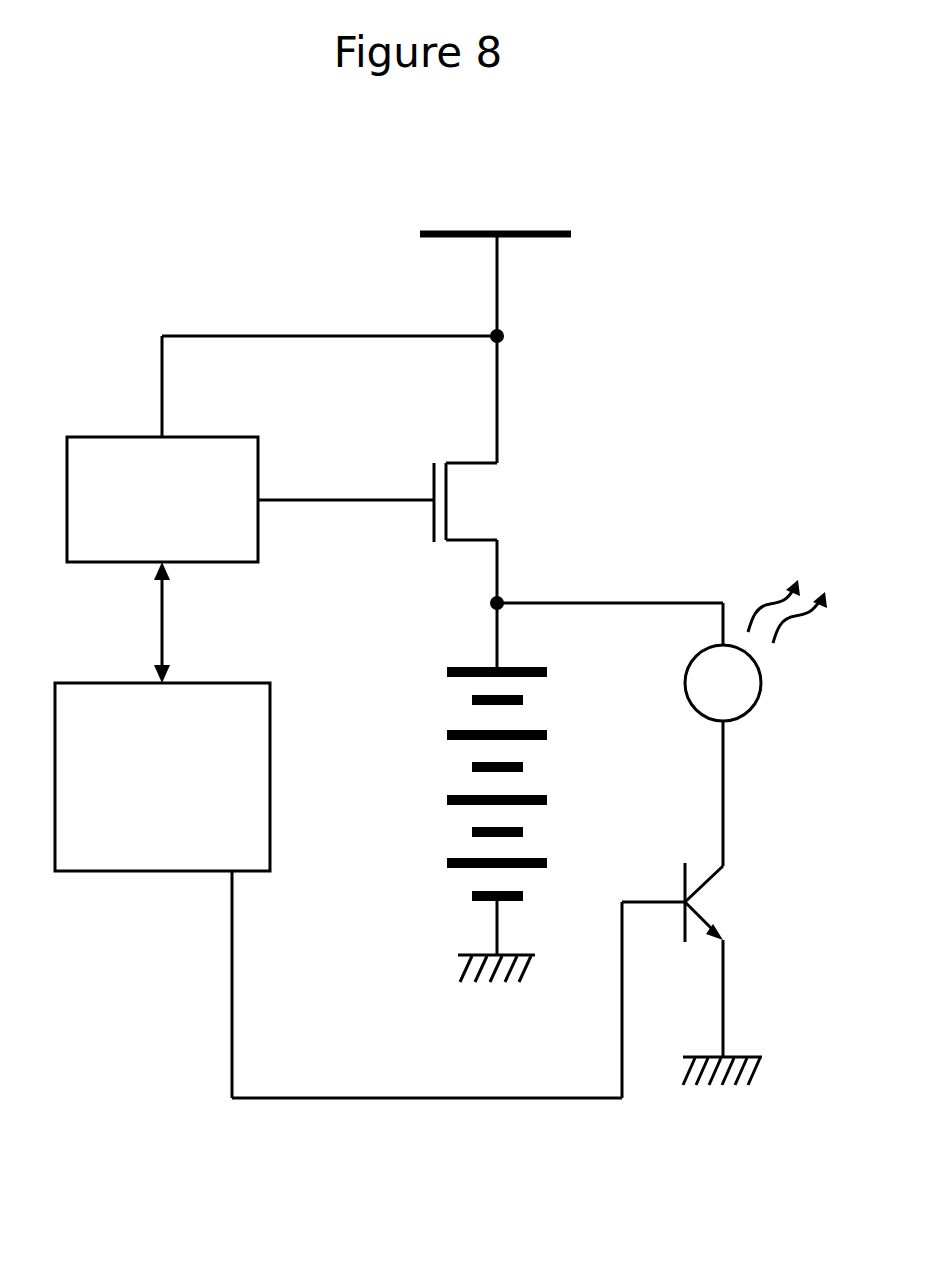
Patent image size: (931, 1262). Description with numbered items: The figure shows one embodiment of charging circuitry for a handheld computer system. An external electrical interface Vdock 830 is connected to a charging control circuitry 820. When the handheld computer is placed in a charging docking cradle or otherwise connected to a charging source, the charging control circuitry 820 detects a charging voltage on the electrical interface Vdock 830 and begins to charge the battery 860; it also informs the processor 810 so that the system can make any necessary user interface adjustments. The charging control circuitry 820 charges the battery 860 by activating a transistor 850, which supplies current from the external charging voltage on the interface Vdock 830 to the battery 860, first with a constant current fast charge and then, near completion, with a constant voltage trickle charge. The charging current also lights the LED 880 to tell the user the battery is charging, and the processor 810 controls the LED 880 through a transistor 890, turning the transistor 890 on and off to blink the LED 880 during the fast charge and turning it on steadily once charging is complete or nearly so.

The processor 810 is at (162, 777).
The charging control circuitry 820 is at (162, 499).
The external electrical interface Vdock 830 is at (495, 211).
The transistor 850 is at (478, 502).
The battery 860 is at (472, 784).
The Light Emitting Diode (LED) 880 is at (756, 650).
The transistor 890 is at (724, 902).